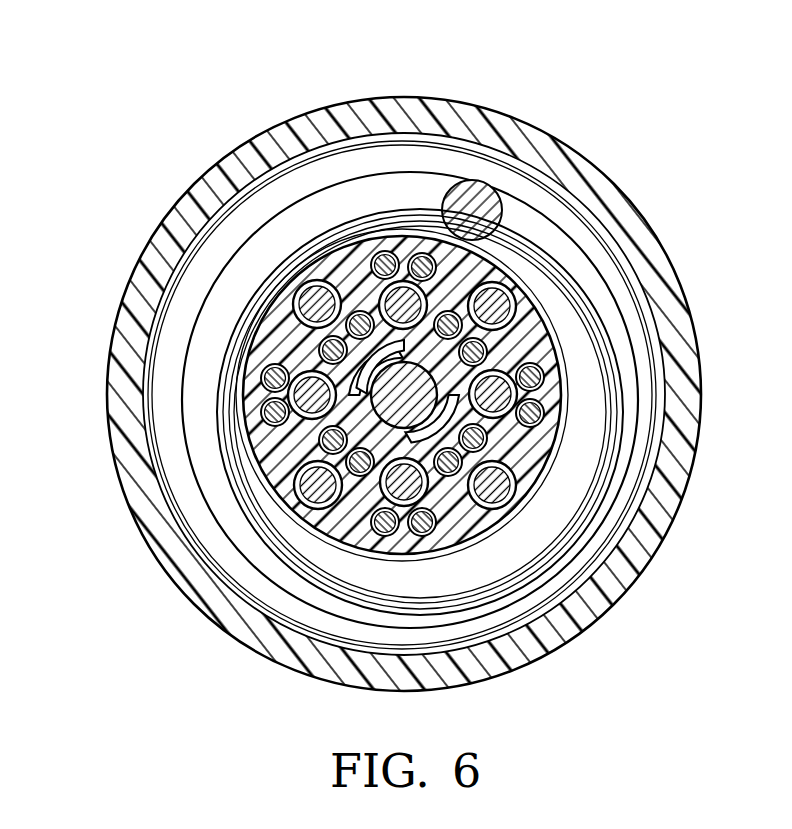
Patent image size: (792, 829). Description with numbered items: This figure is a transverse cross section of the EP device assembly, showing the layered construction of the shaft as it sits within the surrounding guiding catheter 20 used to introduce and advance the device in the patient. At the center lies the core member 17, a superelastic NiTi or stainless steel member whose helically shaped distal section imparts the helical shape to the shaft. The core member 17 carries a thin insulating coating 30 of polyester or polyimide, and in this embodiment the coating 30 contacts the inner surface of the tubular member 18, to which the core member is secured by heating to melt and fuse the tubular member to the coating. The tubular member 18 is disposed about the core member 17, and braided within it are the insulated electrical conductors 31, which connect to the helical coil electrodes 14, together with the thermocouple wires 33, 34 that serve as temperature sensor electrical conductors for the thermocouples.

The guiding catheter 20 is at (382, 117).
The insulating coating 30 is at (386, 284).
The electrodes 14 is at (522, 224).
The tubular member 18 is at (535, 330).
The core member 17 is at (388, 387).
The temperature sensor electrical conductor 33 is at (545, 375).
The temperature sensor electrical conductor 34 is at (545, 412).
The insulated electrical conductors 31 is at (506, 493).